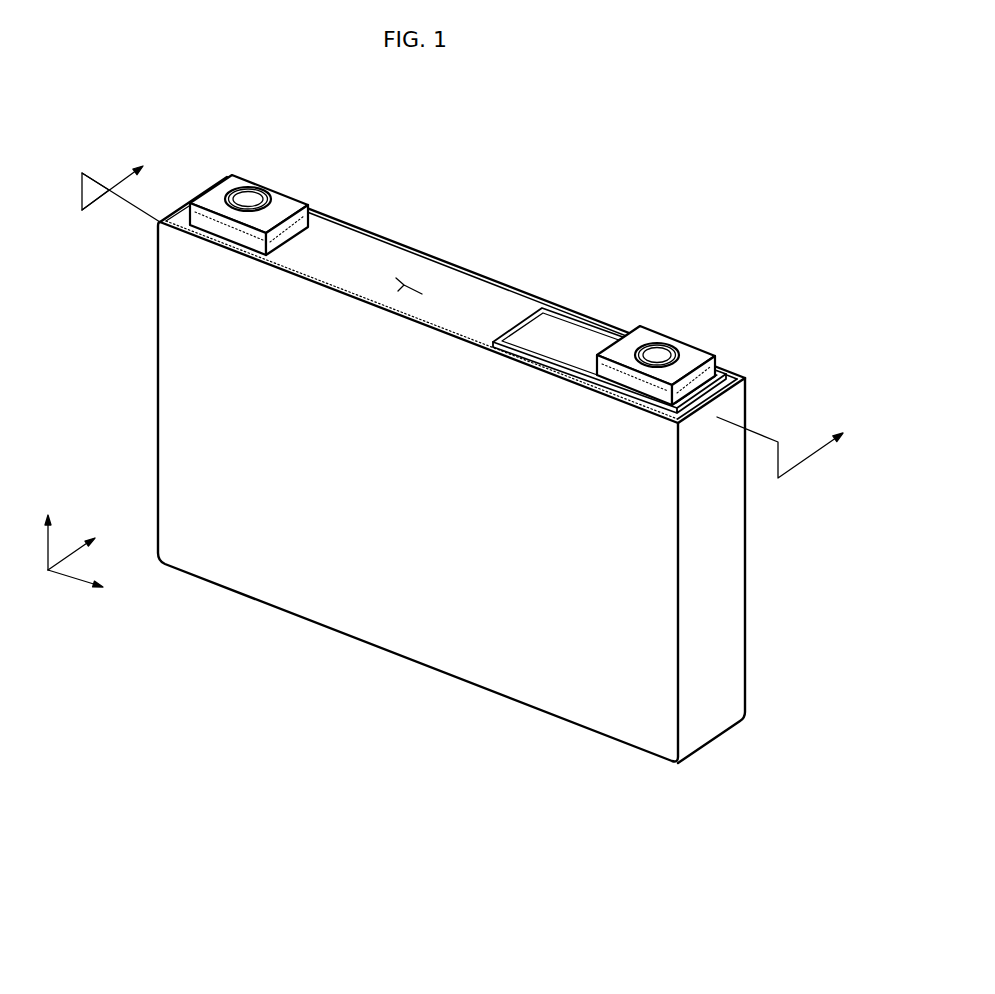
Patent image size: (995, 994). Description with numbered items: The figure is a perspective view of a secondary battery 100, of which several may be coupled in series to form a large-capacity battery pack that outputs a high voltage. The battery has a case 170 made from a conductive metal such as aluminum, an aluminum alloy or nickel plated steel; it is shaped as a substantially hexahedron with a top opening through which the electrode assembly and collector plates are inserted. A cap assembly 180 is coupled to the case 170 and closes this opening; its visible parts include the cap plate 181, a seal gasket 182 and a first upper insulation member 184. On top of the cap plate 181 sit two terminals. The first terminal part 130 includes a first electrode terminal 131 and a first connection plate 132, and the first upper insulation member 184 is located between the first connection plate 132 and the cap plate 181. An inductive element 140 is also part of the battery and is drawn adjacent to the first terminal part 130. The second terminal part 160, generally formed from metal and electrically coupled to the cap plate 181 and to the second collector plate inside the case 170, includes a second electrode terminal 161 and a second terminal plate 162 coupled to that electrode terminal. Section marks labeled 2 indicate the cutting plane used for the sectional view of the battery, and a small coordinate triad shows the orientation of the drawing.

The secondary battery 100 is at (822, 220).
The first terminal part 130 is at (681, 270).
The first electrode terminal 131 is at (655, 346).
The first connection plate 132 is at (578, 337).
The inductive element 140 is at (698, 353).
The second terminal part 160 is at (330, 126).
The second electrode terminal 161 is at (247, 196).
The second terminal plate 162 is at (289, 203).
The case 170 is at (724, 582).
The cap assembly 180 is at (505, 298).
The cap plate 181 is at (368, 250).
The seal gasket 182 is at (418, 276).
The first upper insulation member 184 is at (723, 370).
The section line 2 is at (468, 310).